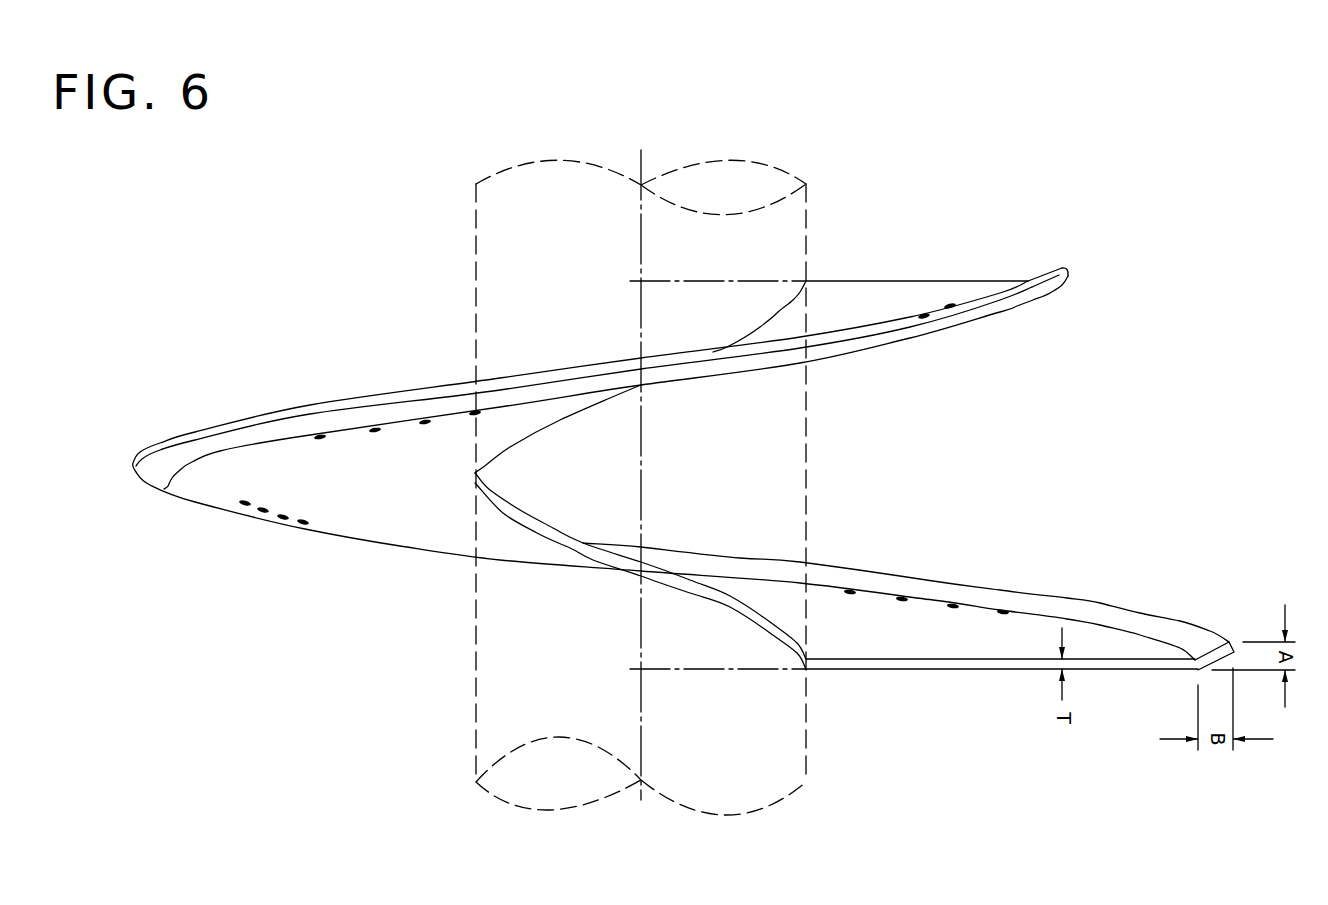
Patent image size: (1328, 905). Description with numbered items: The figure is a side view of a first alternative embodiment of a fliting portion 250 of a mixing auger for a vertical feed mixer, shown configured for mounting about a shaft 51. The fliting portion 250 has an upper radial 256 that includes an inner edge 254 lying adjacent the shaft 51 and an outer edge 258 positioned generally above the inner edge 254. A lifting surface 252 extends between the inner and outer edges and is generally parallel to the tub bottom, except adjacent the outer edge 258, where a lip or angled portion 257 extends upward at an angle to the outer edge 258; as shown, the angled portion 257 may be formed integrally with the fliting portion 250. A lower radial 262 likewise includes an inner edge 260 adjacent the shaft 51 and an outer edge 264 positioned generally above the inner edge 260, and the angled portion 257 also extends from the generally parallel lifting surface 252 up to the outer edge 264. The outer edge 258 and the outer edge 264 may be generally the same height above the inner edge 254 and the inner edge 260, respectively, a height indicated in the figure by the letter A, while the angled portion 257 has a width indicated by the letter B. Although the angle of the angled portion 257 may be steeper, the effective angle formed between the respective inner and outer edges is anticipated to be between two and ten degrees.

The shaft 51 is at (490, 275).
The fliting portion 250 is at (327, 375).
The lifting surface 252 is at (920, 638).
The inner edge 254 is at (808, 281).
The upper radial 256 is at (947, 281).
The angled portion 257 is at (1046, 275).
The outer edge 258 is at (1063, 265).
The inner edge 260 is at (810, 662).
The lower radial 262 is at (1078, 667).
The outer edge 264 is at (1229, 642).